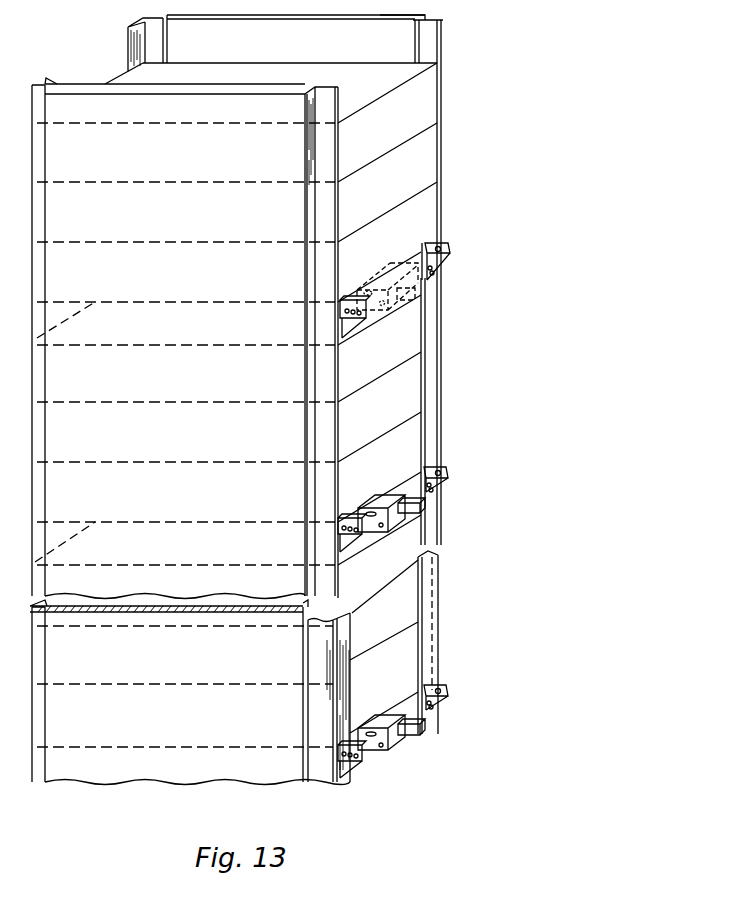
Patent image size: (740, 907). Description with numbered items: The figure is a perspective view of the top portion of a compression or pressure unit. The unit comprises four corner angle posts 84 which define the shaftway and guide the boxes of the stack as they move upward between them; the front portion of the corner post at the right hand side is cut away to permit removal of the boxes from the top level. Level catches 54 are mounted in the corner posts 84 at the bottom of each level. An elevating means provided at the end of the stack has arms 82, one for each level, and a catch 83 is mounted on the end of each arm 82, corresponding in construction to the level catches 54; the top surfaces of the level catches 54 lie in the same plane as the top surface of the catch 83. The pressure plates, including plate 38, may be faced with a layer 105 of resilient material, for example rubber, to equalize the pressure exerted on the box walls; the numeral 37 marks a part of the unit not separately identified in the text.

The rear top rail 37 is at (395, 18).
The plate 38 is at (199, 162).
The level catch 54 is at (450, 254).
The arm 82 is at (430, 299).
The catch 83 is at (390, 263).
The corner angle post 84 is at (46, 77).
The layer of resilient material 105 is at (295, 22).